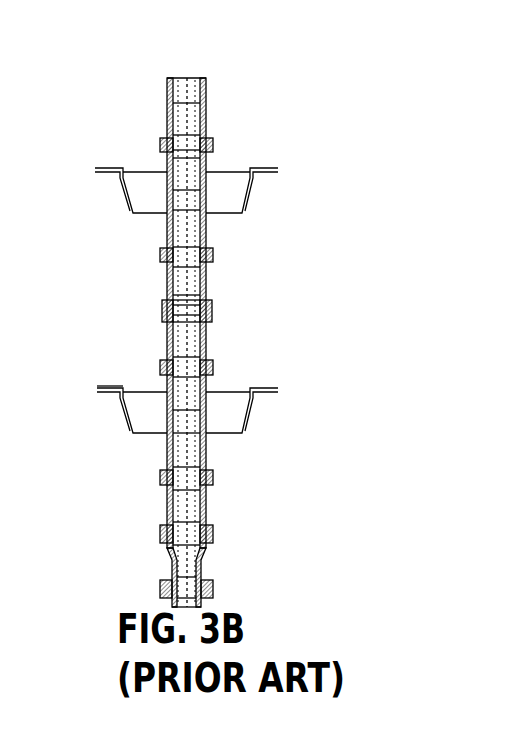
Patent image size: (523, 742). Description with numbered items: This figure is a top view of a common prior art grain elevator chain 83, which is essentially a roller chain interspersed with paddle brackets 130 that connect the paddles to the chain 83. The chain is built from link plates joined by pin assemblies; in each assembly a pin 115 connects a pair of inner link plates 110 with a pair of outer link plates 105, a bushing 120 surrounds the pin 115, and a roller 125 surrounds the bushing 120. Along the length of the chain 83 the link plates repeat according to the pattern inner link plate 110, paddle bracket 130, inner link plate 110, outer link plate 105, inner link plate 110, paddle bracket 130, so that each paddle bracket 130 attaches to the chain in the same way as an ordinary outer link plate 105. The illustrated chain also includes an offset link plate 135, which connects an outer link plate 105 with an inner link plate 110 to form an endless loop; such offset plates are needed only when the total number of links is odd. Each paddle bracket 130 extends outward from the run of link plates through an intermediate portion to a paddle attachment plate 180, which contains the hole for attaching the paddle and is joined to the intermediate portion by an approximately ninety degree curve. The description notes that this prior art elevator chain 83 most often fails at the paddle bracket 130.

The grain elevator chain 83 is at (222, 77).
The outer link plate 105 is at (206, 280).
The inner link plate 110 is at (207, 122).
The pin 115 is at (160, 151).
The bushing 120 is at (168, 292).
The roller 125 is at (168, 135).
The paddle bracket 130 is at (232, 190).
The offset link plate 135 is at (204, 567).
The paddle attachment plate 180 is at (112, 390).